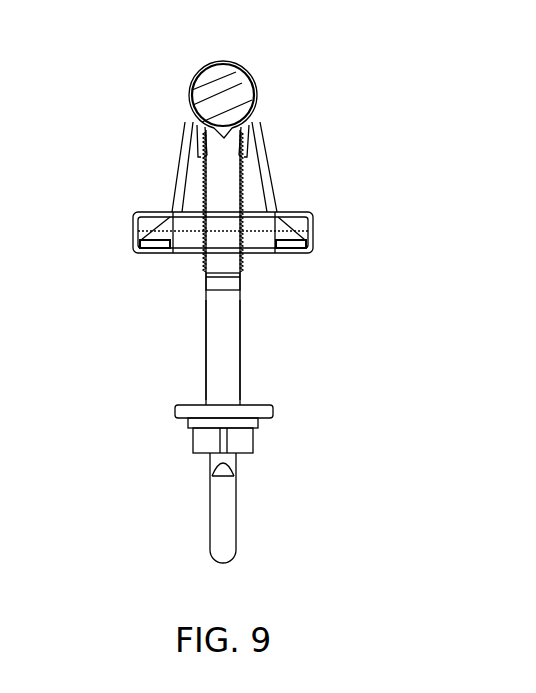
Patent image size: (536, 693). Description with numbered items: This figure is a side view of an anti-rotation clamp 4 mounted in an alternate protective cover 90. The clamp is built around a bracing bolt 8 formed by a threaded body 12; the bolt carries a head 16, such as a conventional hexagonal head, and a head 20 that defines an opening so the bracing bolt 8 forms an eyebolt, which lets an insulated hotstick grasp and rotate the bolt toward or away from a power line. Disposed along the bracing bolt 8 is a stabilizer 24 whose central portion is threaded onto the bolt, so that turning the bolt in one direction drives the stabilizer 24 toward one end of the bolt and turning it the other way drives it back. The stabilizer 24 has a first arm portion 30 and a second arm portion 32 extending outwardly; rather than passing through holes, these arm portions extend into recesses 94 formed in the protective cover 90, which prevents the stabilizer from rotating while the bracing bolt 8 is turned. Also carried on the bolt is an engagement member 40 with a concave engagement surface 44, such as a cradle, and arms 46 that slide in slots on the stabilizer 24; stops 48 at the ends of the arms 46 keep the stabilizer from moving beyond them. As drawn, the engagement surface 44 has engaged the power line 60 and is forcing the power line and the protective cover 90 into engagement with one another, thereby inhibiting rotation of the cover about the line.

The anti-rotation clamp 4 is at (102, 360).
The bracing bolt 8 is at (217, 338).
The threaded body 12 is at (238, 343).
The head 16 is at (245, 440).
The head 20 is at (230, 515).
The stabilizer 24 is at (250, 220).
The first arm portion 30 is at (142, 258).
The second arm portion 32 is at (305, 250).
The engagement member 40 is at (255, 128).
The engagement surface 44 is at (195, 117).
The arms 46 is at (217, 205).
The stops 48 is at (233, 280).
The power line 60 is at (198, 75).
The protective cover 90 is at (255, 73).
The recesses 94 is at (135, 212).